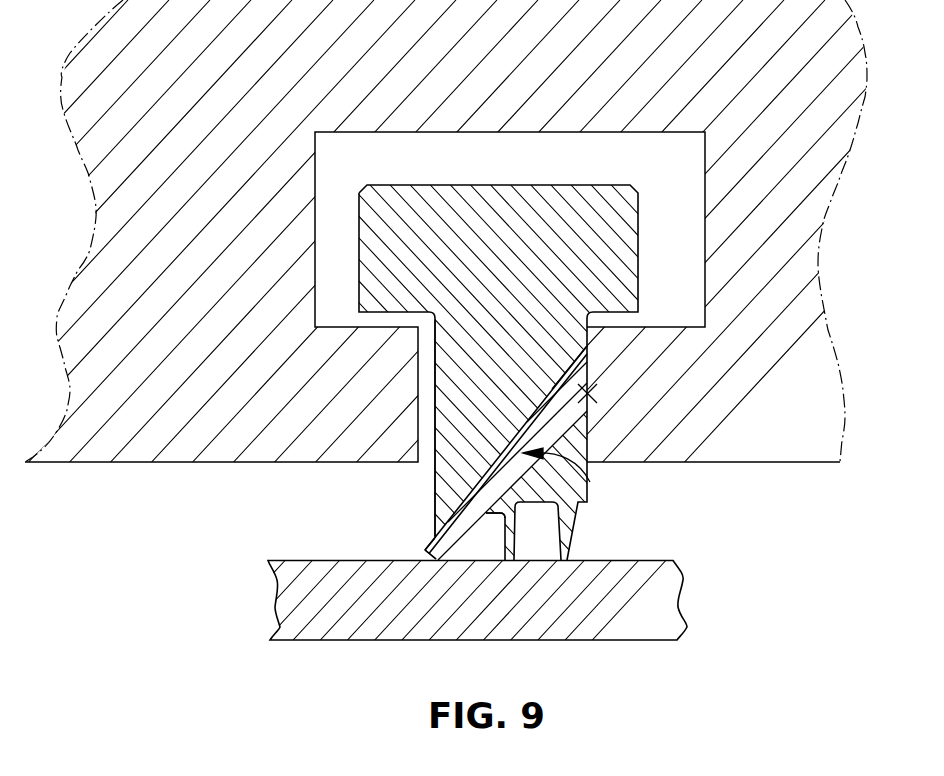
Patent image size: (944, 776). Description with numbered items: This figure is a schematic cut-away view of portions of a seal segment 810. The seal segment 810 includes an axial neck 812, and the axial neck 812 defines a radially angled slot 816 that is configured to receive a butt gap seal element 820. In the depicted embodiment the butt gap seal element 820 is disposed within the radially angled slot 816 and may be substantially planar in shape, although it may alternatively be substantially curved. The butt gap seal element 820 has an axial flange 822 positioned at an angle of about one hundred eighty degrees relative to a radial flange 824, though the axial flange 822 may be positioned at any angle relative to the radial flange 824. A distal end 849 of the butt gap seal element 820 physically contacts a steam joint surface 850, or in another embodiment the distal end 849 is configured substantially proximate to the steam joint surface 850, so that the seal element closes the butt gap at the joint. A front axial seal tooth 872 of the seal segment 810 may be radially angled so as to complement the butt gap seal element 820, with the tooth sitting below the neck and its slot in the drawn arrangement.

The seal segment 810 is at (503, 185).
The axial neck 812 is at (565, 494).
The radially angled slot 816 is at (568, 412).
The butt gap seal element 820 is at (478, 492).
The axial flange 822 is at (552, 389).
The radial flange 824 is at (432, 541).
The distal end 849 is at (588, 353).
The steam joint surface 850 is at (592, 392).
The front axial seal tooth 872 is at (484, 516).